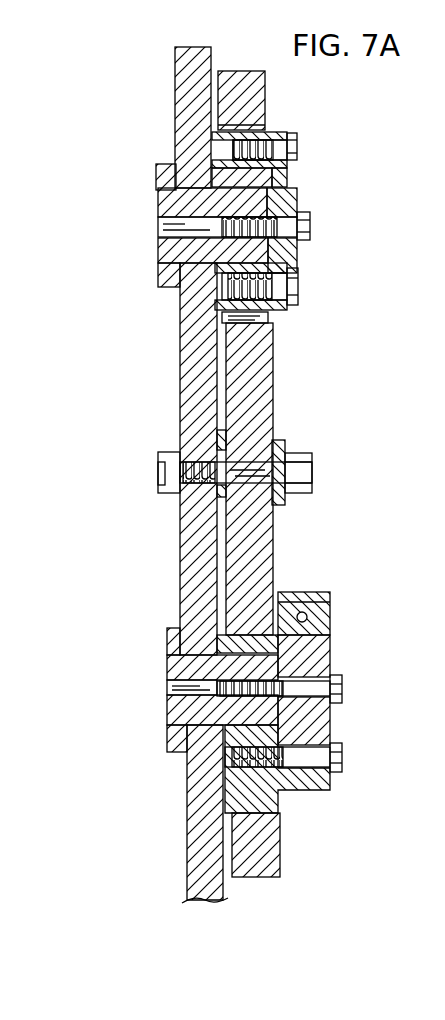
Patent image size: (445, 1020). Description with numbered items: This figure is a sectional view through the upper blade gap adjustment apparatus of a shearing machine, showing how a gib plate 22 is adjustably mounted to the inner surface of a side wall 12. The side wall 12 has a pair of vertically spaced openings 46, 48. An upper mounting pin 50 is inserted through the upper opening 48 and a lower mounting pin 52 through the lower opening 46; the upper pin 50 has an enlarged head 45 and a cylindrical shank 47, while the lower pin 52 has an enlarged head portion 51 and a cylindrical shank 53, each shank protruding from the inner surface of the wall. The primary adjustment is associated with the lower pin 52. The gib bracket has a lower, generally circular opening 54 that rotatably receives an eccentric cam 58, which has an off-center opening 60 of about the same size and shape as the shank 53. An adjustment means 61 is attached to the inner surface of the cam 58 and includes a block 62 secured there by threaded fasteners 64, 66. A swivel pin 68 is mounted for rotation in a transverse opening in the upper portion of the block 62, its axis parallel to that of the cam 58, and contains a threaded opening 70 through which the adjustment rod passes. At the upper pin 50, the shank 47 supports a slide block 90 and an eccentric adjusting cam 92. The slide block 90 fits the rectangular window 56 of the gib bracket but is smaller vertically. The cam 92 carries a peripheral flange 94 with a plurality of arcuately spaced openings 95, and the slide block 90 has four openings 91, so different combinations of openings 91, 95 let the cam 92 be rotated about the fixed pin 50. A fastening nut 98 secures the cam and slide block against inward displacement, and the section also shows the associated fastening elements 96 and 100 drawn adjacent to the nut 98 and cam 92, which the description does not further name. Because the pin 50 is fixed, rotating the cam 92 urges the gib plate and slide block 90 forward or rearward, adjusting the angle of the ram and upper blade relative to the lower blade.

The side wall 12 is at (180, 388).
The gib plate 22 is at (273, 398).
The enlarged head 45 is at (165, 175).
The opening 46 is at (240, 722).
The cylindrical shank 47 is at (170, 212).
The opening 48 is at (175, 197).
The upper mounting pin 50 is at (170, 255).
The enlarged head portion 51 is at (178, 630).
The lower mounting pin 52 is at (170, 664).
The cylindrical shank 53 is at (225, 665).
The circular opening 54 is at (283, 797).
The rectangular opening 56 is at (265, 318).
The eccentric cam 58 is at (225, 786).
The opening 60 is at (232, 718).
The adjustment means 61 is at (332, 720).
The block 62 is at (330, 660).
The threaded fastener 64 is at (342, 690).
The threaded fastener 66 is at (342, 758).
The swivel pin 68 is at (330, 600).
The threaded opening 70 is at (307, 618).
The slide block 90 is at (283, 125).
The openings 91 is at (175, 150).
The eccentric adjusting cam 92 is at (287, 178).
The peripheral flange 94 is at (288, 170).
The openings 95 is at (292, 133).
The washer 96 is at (300, 143).
The fastening nut 98 is at (300, 198).
The nut 100 is at (310, 226).